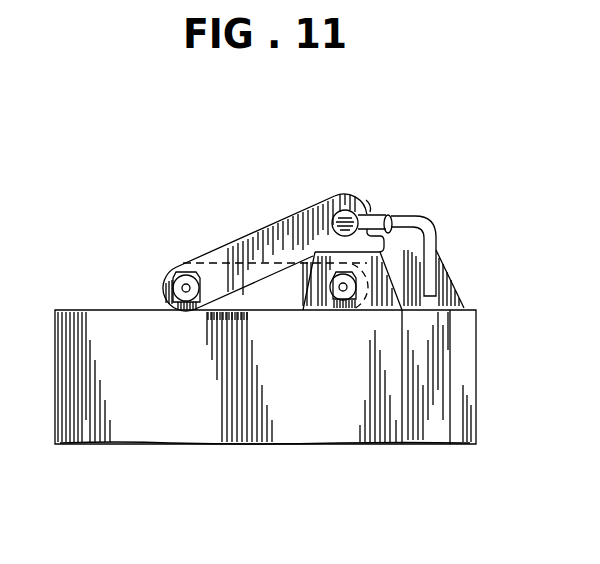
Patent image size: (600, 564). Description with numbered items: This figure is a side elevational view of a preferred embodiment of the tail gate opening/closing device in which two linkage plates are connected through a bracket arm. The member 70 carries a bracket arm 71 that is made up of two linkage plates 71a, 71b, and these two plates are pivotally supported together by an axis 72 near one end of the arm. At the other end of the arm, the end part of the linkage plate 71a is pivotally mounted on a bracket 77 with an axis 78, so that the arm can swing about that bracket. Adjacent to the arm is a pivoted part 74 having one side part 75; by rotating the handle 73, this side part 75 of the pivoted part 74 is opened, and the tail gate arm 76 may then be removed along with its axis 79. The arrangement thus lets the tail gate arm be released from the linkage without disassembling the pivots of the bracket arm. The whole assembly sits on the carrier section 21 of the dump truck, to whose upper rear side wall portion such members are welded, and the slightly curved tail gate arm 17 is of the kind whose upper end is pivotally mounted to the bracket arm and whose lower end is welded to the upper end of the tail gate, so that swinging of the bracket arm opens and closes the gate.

The member 70 is at (372, 152).
The bracket arm 71 is at (262, 228).
The linkage plate 71a is at (282, 297).
The linkage plate 71b is at (218, 258).
The axis 72 is at (183, 286).
The handle 73 is at (436, 248).
The pivoted part 74 is at (362, 197).
The side part 75 is at (393, 214).
The tail gate arm 76 is at (447, 293).
The bracket 77 is at (368, 298).
The axis 78 is at (332, 302).
The axis 79 is at (340, 206).
The tail gate arm 17 is at (468, 388).
The carrier section 21 is at (163, 440).